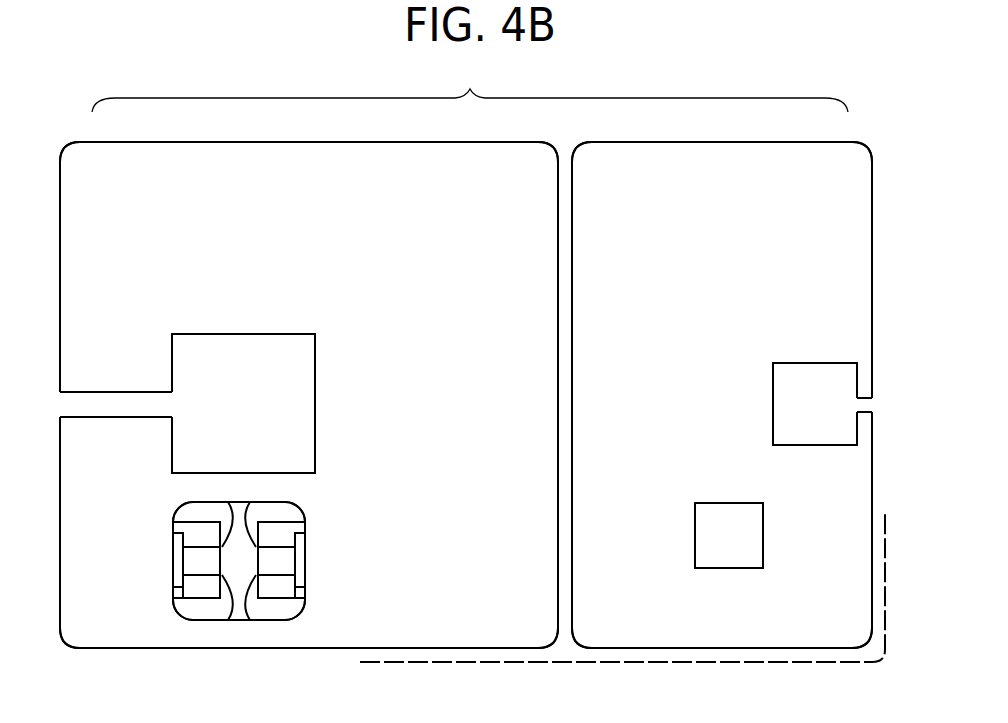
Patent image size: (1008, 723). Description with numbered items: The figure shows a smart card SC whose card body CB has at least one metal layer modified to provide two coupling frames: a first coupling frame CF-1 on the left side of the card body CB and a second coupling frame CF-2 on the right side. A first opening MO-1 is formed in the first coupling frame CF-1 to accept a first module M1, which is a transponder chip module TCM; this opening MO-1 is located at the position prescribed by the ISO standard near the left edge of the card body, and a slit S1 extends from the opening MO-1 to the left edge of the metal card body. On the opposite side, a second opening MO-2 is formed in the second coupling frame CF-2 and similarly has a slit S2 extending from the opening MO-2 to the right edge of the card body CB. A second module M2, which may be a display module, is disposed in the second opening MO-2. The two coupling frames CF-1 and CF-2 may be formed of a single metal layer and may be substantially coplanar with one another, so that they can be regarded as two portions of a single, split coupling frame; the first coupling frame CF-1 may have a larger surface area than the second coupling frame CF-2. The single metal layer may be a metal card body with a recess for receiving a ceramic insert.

The smart card SC is at (134, 80).
The card body CB is at (470, 88).
The first coupling frame CF-1 is at (250, 138).
The second coupling frame CF-2 is at (712, 137).
The slit S1 is at (52, 406).
The slit S2 is at (882, 403).
The first opening MO-1 is at (238, 327).
The second opening MO-2 is at (810, 348).
The first module M1 is at (280, 508).
The transponder chip module TCM is at (198, 561).
The second module M2 is at (788, 408).